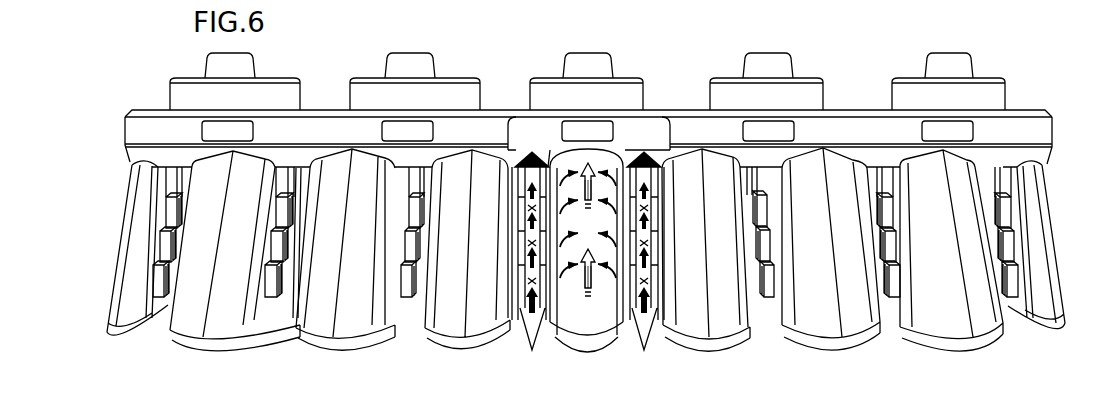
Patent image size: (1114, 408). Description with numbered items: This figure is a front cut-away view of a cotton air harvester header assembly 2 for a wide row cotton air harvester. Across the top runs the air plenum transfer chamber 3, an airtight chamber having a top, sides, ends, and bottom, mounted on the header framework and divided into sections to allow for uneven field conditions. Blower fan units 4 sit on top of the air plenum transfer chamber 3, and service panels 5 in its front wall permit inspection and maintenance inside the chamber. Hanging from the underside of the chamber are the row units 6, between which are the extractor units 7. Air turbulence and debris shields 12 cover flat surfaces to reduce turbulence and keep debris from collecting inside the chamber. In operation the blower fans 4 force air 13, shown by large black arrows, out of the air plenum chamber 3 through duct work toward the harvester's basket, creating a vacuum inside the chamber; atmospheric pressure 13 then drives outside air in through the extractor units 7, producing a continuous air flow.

The cotton air harvester header assembly 2 is at (140, 85).
The air plenum transfer chamber 3 is at (148, 131).
The blower fan units 4 is at (398, 65).
The service panels 5 is at (226, 131).
The row units 6 is at (118, 341).
The extractor units 7 is at (163, 284).
The air turbulence and debris shields 12 is at (530, 146).
The air flow 13 is at (588, 229).